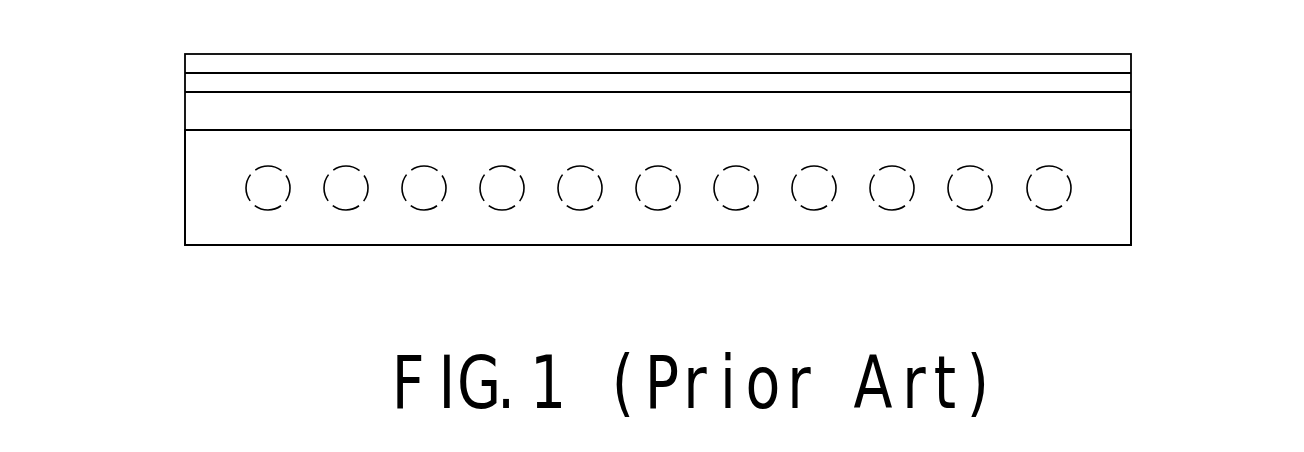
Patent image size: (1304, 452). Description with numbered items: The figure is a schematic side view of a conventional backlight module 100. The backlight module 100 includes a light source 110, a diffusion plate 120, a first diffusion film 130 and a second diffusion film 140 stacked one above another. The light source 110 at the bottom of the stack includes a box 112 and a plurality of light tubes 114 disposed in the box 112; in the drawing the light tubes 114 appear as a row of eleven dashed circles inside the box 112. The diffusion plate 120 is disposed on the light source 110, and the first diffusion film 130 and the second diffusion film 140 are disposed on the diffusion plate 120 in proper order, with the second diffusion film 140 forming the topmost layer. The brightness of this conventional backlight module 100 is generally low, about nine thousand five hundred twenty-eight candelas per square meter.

The backlight module 100 is at (1256, 310).
The light source 110 is at (1218, 148).
The box 112 is at (1112, 210).
The light tubes 114 is at (1057, 183).
The diffusion plate 120 is at (192, 118).
The first diffusion film 130 is at (192, 84).
The second diffusion film 140 is at (192, 65).